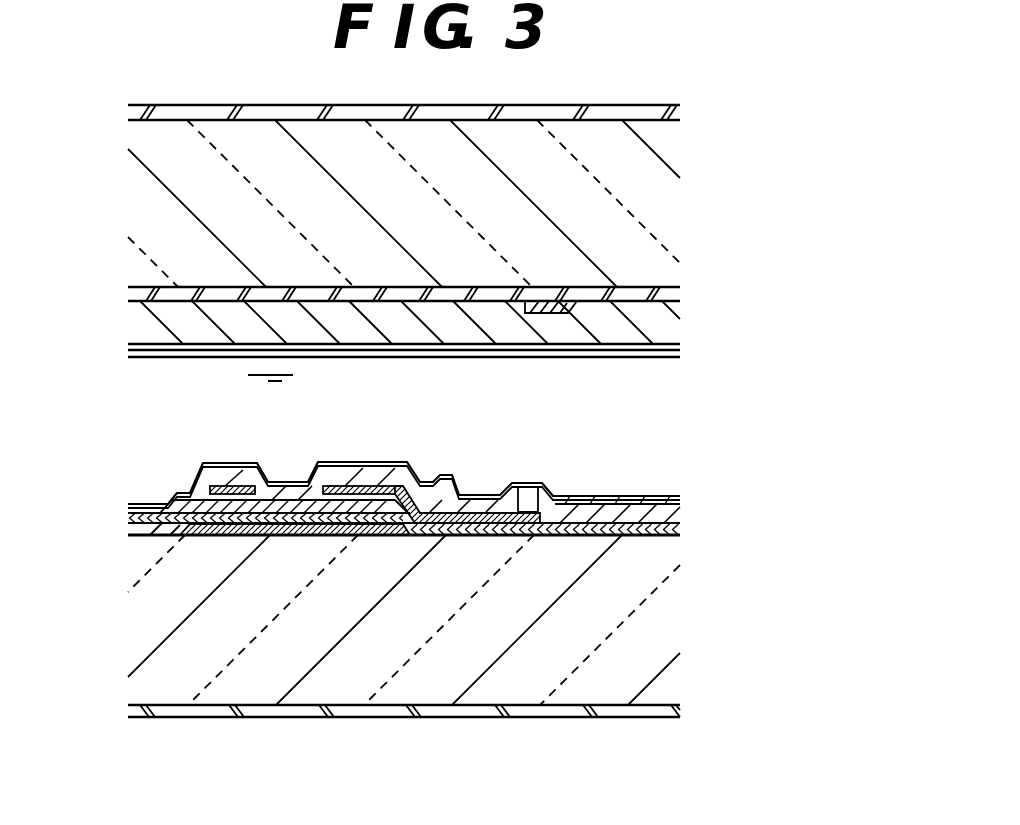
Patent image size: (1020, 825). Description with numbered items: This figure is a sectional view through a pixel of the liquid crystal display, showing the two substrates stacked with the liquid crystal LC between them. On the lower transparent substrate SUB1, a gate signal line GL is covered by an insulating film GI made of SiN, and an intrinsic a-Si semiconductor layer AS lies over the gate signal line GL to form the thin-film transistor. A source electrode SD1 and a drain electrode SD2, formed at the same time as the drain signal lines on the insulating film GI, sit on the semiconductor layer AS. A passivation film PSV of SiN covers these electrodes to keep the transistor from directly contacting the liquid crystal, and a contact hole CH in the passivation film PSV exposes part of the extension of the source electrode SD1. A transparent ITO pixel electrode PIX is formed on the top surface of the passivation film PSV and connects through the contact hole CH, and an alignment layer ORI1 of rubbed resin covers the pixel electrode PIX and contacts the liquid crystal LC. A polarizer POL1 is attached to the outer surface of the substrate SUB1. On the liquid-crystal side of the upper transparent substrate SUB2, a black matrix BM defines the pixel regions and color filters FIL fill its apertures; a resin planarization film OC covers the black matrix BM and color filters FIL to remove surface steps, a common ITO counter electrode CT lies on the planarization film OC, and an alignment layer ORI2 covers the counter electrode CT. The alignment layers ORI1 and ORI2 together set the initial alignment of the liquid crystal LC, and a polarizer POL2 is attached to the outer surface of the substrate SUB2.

The polarizer POL2 is at (680, 118).
The transparent substrate SUB2 is at (673, 156).
The black matrix BM is at (132, 294).
The color filter FIL is at (680, 296).
The planarization film OC is at (140, 322).
The counter electrode CT is at (130, 349).
The alignment layer ORI2 is at (680, 357).
The liquid crystal LC is at (240, 377).
The drain electrode SD2 is at (240, 472).
The source electrode SD1 is at (417, 497).
The contact hole CH is at (532, 500).
The semiconductor layer AS is at (200, 506).
The alignment layer ORI1 is at (680, 497).
The pixel electrode PIX is at (683, 501).
The passivation film PSV is at (683, 519).
The insulating film GI is at (683, 530).
The gate signal line GL is at (207, 537).
The transparent substrate SUB1 is at (672, 607).
The polarizer POL1 is at (683, 711).